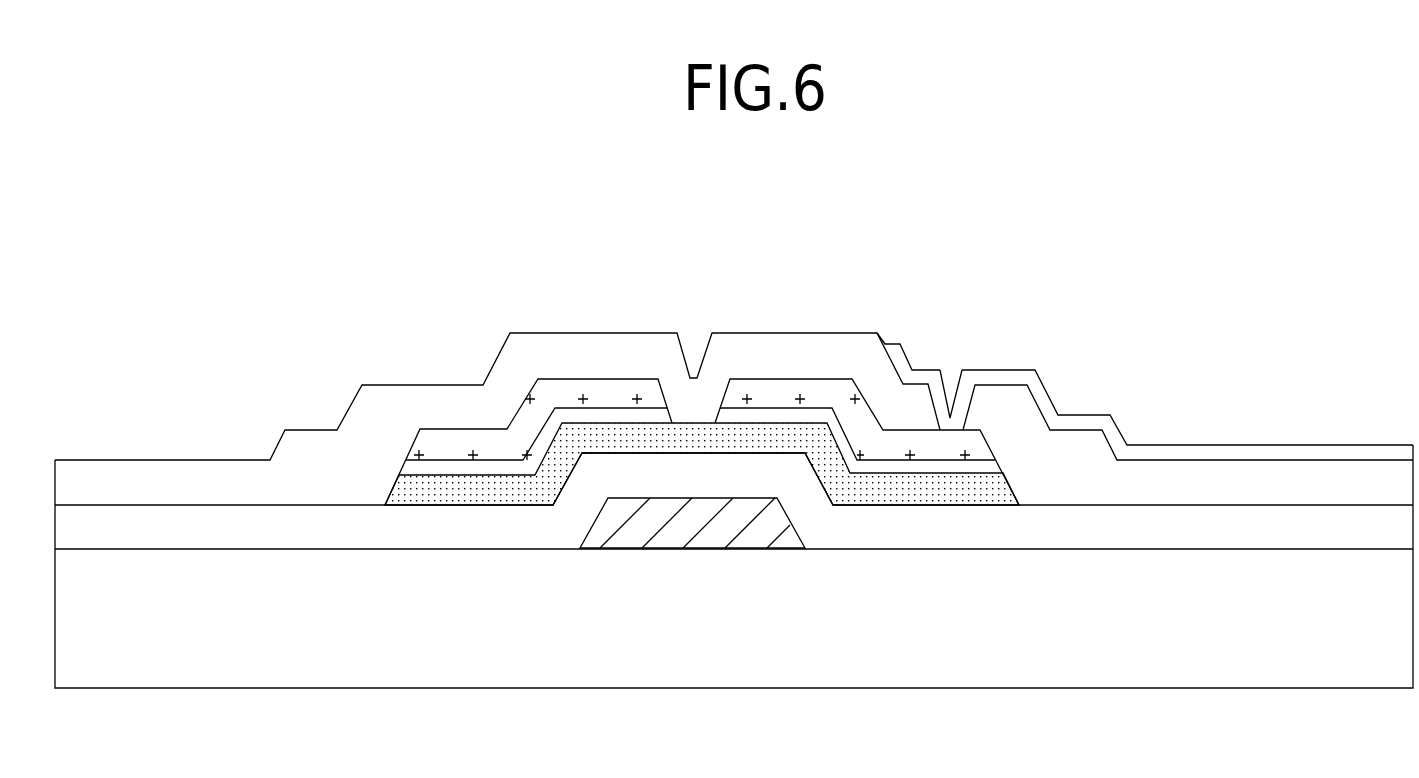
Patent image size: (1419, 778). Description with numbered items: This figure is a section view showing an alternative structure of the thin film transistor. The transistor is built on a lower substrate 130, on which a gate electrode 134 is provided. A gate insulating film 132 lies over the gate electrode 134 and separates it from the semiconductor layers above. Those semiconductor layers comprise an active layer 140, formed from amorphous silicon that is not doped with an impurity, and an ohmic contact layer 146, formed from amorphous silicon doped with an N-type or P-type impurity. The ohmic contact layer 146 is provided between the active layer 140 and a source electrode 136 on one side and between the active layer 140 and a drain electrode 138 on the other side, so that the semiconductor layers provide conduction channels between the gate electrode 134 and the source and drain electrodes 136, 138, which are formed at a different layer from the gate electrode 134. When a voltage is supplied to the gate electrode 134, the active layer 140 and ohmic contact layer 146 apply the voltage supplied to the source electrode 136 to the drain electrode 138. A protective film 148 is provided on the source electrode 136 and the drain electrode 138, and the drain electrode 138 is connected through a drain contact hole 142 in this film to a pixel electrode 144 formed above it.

The lower substrate 130 is at (275, 678).
The gate insulating film 132 is at (880, 542).
The gate electrode 134 is at (678, 537).
The source electrode 136 is at (563, 390).
The drain electrode 138 is at (782, 397).
The active layer 140 is at (643, 437).
The drain contact hole 142 is at (950, 372).
The pixel electrode 144 is at (1160, 445).
The ohmic contact layer 146 is at (465, 472).
The protective film 148 is at (198, 465).